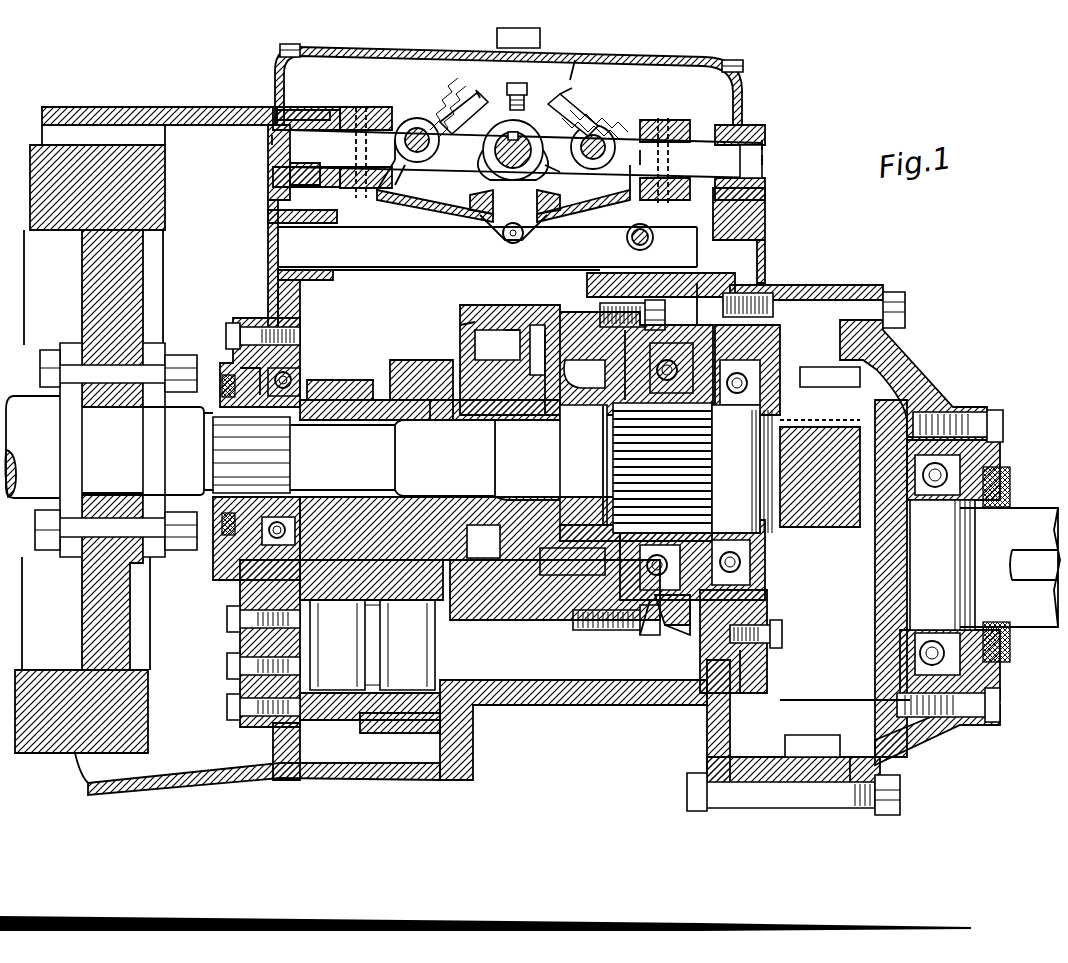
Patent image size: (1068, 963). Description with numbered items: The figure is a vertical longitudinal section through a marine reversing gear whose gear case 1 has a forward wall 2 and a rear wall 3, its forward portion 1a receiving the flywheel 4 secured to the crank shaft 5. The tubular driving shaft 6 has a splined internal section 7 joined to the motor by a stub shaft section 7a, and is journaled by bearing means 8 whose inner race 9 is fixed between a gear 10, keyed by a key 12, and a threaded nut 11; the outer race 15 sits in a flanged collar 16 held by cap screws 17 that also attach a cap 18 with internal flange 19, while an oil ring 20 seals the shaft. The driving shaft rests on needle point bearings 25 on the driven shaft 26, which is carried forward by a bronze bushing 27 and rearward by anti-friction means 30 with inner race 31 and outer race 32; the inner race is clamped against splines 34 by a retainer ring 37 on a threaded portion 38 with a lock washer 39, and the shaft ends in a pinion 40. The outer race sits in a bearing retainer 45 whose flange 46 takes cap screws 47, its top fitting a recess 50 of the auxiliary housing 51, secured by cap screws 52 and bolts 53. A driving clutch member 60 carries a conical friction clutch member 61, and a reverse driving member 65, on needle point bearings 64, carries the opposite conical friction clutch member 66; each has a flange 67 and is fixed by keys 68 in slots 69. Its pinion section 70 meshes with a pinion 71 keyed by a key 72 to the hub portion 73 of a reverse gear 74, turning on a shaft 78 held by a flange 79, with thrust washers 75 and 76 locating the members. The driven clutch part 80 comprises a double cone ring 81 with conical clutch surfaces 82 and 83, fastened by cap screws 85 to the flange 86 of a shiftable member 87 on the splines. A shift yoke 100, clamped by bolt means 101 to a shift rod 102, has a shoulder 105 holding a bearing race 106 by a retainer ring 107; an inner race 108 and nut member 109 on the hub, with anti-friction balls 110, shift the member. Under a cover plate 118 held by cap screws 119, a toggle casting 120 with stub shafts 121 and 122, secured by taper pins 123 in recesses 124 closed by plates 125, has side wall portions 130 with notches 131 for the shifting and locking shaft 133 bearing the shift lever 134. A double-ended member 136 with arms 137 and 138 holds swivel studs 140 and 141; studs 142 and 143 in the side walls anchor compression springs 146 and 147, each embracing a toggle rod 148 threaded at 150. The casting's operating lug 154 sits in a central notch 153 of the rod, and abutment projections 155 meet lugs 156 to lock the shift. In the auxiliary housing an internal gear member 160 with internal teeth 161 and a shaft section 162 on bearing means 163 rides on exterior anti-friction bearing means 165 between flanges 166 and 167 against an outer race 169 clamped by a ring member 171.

The gear case 1 is at (198, 106).
The forward portion of the case 1a is at (88, 108).
The forward wall 2 is at (268, 268).
The rear wall 3 is at (745, 208).
The flywheel 4 is at (40, 188).
The crank shaft 5 is at (20, 408).
The driving shaft 6 is at (330, 420).
The splined internal section 7 is at (275, 420).
The stub shaft section 7a is at (170, 440).
The bearing means 8 is at (300, 375).
The inner race 9 is at (235, 372).
The gear 10 is at (350, 376).
The threaded nut 11 is at (222, 390).
The key 12 is at (402, 424).
The outer race 15 is at (305, 338).
The flanged collar 16 is at (318, 360).
The cap screws 17 is at (226, 337).
The cap 18 is at (250, 318).
The internal flange 19 is at (236, 550).
The oil ring 20 is at (222, 510).
The needle point bearings 25 is at (590, 412).
The driven shaft 26 is at (500, 498).
The bronze bushing 27 is at (358, 425).
The anti-friction means 30 is at (782, 330).
The inner race 31 is at (738, 408).
The outer race 32 is at (722, 345).
The splines 34 is at (700, 458).
The retainer ring 37 is at (765, 550).
The threaded portion 38 is at (835, 420).
The lock washer 39 is at (848, 402).
The pinion 40 is at (822, 515).
The bearing retainer 45 is at (770, 600).
The flange 46 is at (770, 660).
The cap screws 47 is at (785, 634).
The recess 50 is at (774, 298).
The auxiliary housing 51 is at (850, 290).
The cap screws 52 is at (908, 304).
The bolts 53 is at (905, 795).
The driving clutch member 60 is at (584, 374).
The conical friction clutch member 61 is at (568, 330).
The needle point bearings 64 is at (452, 420).
The reverse driving member 65 is at (462, 352).
The conical friction clutch member 66 is at (468, 330).
The radially inwardly extending flange 67 is at (520, 380).
The keys 68 is at (492, 362).
The slots 69 is at (510, 330).
The pinion section 70 is at (408, 362).
The pinion 71 is at (473, 733).
The key 72 is at (284, 500).
The hub portion 73 is at (400, 612).
The reverse gear 74 is at (327, 766).
The thrust washer 75 is at (532, 375).
The thrust washer 76 is at (400, 515).
The shaft 78 is at (420, 656).
The flange 79 is at (238, 684).
The driven clutch part 80 is at (548, 288).
The double cone ring 81 is at (538, 625).
The conical clutch surface 82 is at (608, 300).
The conical clutch surface 83 is at (522, 330).
The cap screws 85 is at (676, 300).
The flange 86 is at (640, 300).
The shiftable member 87 is at (625, 378).
The shift yoke 100 is at (708, 292).
The bolt means 101 is at (654, 228).
The shift rod 102 is at (300, 232).
The shoulder 105 is at (658, 635).
The bearing race 106 is at (678, 640).
The retainer ring 107 is at (690, 606).
The inner race 108 is at (700, 495).
The nut member 109 is at (703, 522).
The anti-friction balls 110 is at (612, 520).
The cover plate 118 is at (368, 50).
The cap screws 119 is at (282, 46).
The toggle casting 120 is at (478, 220).
The stub shaft 121 is at (330, 130).
The stub shaft 122 is at (768, 165).
The taper pins 123 is at (364, 106).
The recesses 124 is at (292, 135).
The plates 125 is at (272, 140).
The side wall portions 130 is at (398, 116).
The notches 131 is at (560, 170).
The shifting and locking shaft 133 is at (525, 130).
The shift lever 134 is at (497, 32).
The double-ended member 136 is at (503, 118).
The arm 137 is at (465, 104).
The arm 138 is at (580, 96).
The swivel stud 140 is at (450, 112).
The swivel stud 141 is at (590, 110).
The swivel stud 142 is at (425, 185).
The swivel stud 143 is at (598, 172).
The compression spring 146 is at (432, 170).
The compression spring 147 is at (608, 120).
The toggle rod 148 is at (476, 90).
The threaded portion 150 is at (650, 160).
The central notch 153 is at (505, 236).
The operating lug 154 is at (512, 244).
The abutment projections 155 is at (510, 182).
The lugs 156 is at (470, 205).
The internal gear member 160 is at (920, 400).
The internal teeth 161 is at (820, 700).
The shaft section 162 is at (1030, 628).
The anti-friction bearing means 163 is at (975, 460).
The exterior anti-friction bearing means 165 is at (890, 360).
The flange 166 is at (780, 740).
The flange 167 is at (880, 745).
The outer race 169 is at (800, 790).
The ring member 171 is at (712, 748).